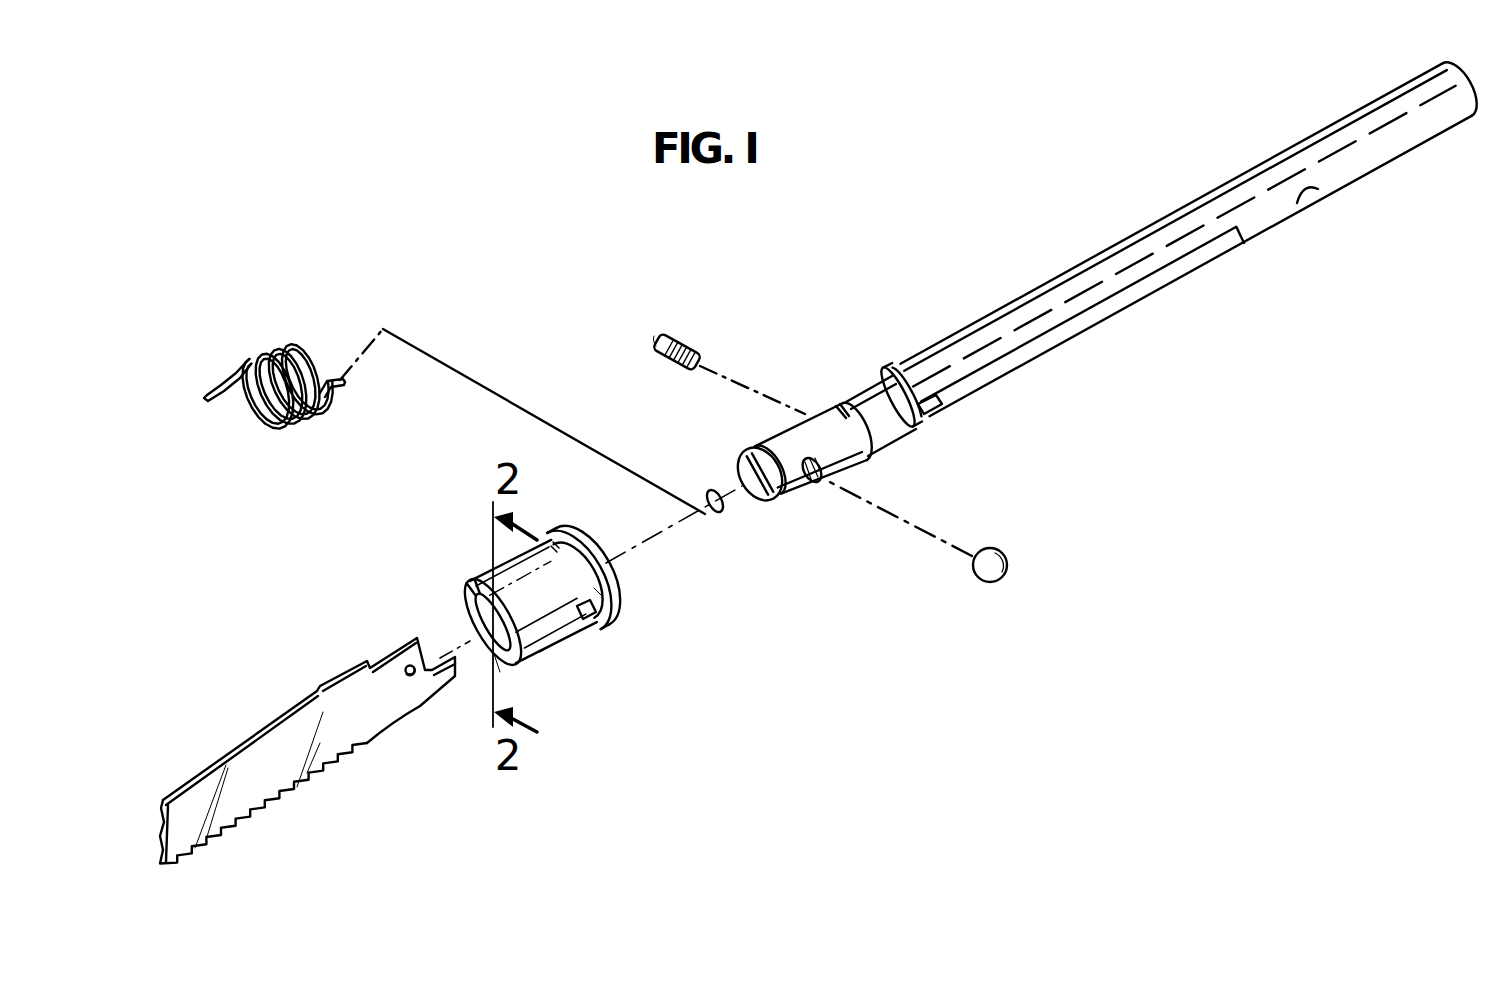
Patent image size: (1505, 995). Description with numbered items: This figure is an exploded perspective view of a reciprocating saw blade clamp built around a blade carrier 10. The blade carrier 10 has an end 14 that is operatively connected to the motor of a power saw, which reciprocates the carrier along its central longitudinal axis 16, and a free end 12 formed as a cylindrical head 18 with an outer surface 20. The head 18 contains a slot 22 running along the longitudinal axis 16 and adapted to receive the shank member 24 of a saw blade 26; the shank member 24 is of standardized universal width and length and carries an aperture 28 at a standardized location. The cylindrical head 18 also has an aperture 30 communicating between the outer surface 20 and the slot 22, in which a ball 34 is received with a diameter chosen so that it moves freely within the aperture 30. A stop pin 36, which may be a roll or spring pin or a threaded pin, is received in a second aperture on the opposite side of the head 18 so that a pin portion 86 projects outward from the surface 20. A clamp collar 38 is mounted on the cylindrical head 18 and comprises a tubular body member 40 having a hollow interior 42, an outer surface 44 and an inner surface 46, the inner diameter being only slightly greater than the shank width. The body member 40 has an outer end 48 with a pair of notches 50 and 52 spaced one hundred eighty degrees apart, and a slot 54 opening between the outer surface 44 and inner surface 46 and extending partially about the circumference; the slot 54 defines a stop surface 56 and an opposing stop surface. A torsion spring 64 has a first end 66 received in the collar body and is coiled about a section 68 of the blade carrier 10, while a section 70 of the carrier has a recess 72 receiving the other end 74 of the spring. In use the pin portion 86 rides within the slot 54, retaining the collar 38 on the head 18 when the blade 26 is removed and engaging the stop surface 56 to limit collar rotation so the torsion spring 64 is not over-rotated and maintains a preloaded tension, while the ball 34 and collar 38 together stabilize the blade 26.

The blade carrier 10 is at (1034, 376).
The free end 12 is at (778, 465).
The end 14 is at (1447, 138).
The central longitudinal axis 16 is at (706, 496).
The cylindrical head 18 is at (848, 400).
The outer surface 20 is at (808, 440).
The slot 22 is at (746, 452).
The shank member 24 is at (307, 734).
The saw blade 26 is at (292, 734).
The aperture 28 is at (406, 666).
The aperture 30 is at (822, 483).
The ball 34 is at (975, 575).
The stop pin 36 is at (690, 342).
The clamp collar 38 is at (570, 644).
The tubular body member 40 is at (557, 602).
The hollow interior 42 is at (452, 601).
The outer surface 44 is at (592, 570).
The inner surface 46 is at (502, 666).
The outer end 48 is at (466, 604).
The notch 50 is at (541, 566).
The notch 52 is at (472, 666).
The slot 54 is at (604, 600).
The stop surface 56 is at (592, 622).
The torsion spring 64 is at (278, 363).
The first end 66 is at (206, 392).
The section 68 is at (890, 368).
The section 70 is at (1126, 309).
The recess 72 is at (944, 413).
The end 74 is at (346, 384).
The pin portion 86 is at (656, 345).